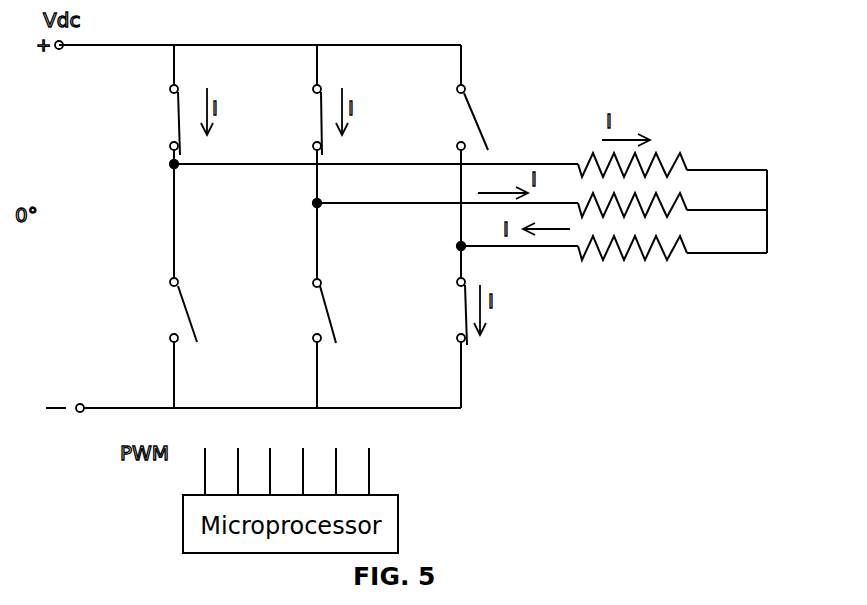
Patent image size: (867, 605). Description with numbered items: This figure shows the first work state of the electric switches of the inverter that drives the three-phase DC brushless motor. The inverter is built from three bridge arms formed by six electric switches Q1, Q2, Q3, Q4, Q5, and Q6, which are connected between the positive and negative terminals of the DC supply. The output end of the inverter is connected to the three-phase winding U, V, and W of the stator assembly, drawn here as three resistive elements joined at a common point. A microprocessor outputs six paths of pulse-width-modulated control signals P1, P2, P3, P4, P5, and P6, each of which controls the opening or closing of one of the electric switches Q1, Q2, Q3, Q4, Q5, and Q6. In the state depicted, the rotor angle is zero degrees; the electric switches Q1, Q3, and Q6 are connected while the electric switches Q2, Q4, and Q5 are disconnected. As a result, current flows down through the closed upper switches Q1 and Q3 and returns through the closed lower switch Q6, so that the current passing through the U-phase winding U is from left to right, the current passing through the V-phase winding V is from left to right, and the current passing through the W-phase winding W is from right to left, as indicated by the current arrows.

The electric switch Q1 is at (156, 120).
The electric switch Q2 is at (162, 310).
The electric switch Q3 is at (296, 120).
The electric switch Q4 is at (303, 311).
The electric switch Q5 is at (452, 117).
The electric switch Q6 is at (443, 311).
The U-phase winding U is at (672, 155).
The V-phase winding V is at (672, 198).
The W-phase winding W is at (672, 239).
The PWM signal path P1 is at (204, 458).
The PWM signal path P2 is at (237, 458).
The PWM signal path P3 is at (269, 458).
The PWM signal path P4 is at (302, 458).
The PWM signal path P5 is at (335, 458).
The PWM signal path P6 is at (368, 458).